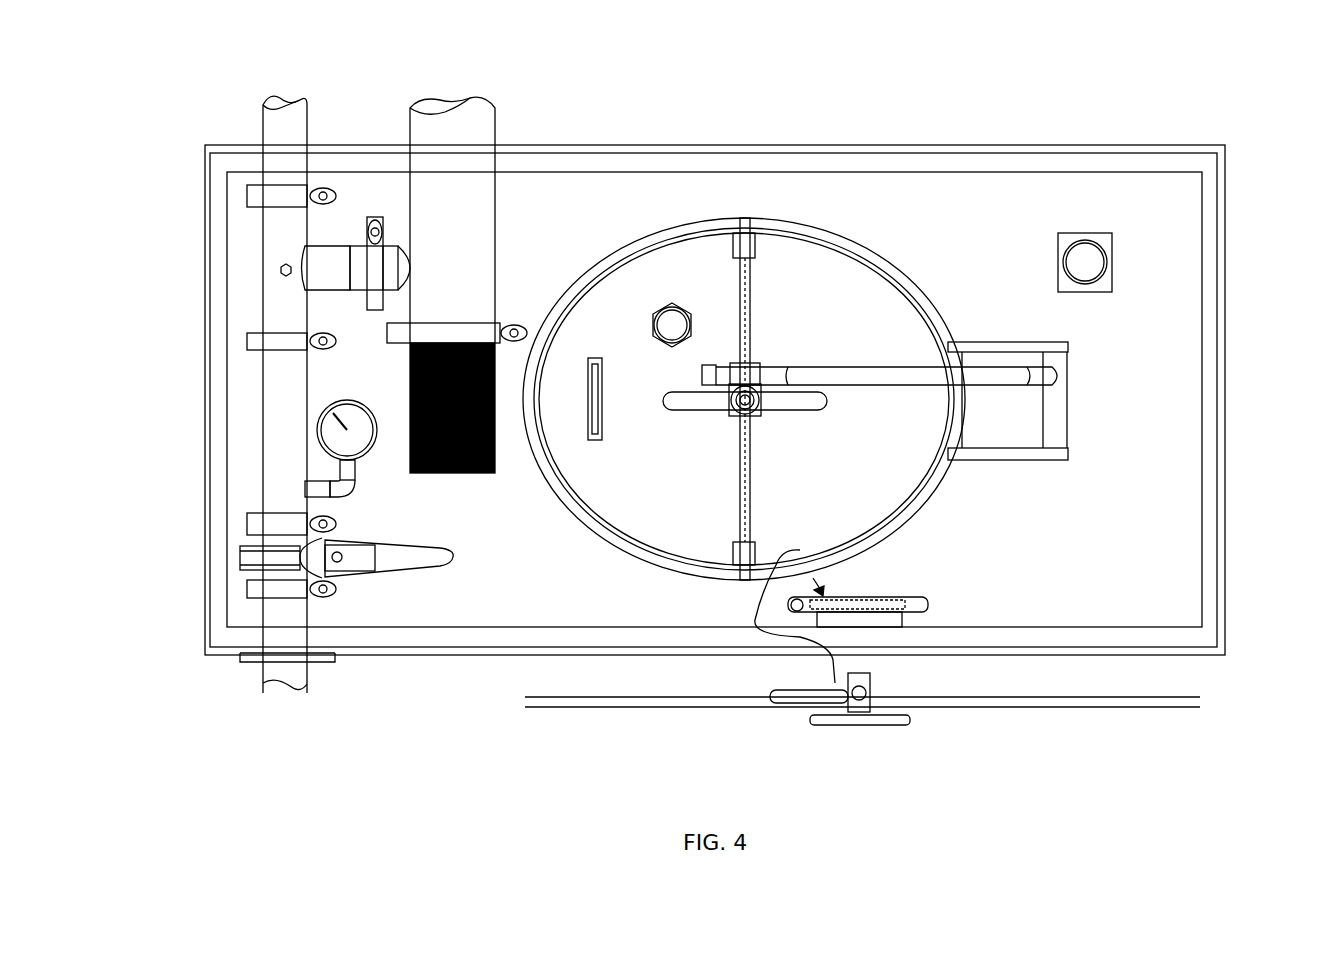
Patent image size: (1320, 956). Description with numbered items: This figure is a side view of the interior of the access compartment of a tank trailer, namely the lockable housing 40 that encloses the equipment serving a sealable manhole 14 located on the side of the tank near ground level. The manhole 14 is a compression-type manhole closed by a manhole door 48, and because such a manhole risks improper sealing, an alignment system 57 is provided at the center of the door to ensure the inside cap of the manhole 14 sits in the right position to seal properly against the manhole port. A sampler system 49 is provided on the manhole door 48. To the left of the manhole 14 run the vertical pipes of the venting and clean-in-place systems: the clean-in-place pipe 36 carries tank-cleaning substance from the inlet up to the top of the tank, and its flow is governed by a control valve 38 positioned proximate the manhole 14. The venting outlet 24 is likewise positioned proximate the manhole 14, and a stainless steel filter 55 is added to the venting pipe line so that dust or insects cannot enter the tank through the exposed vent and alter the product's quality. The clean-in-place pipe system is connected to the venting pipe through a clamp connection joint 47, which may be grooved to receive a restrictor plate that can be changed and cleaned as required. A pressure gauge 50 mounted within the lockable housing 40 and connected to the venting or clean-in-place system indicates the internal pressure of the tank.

The sealable manhole 14 is at (867, 298).
The venting outlet 24 is at (478, 483).
The clean-in-place pipe 36 is at (290, 421).
The control valve 38 is at (357, 562).
The lockable housing 40 is at (1207, 248).
The clamp connection joint 47 is at (350, 238).
The manhole door 48 is at (880, 488).
The sampler system 49 is at (670, 320).
The pressure gauge 50 is at (358, 445).
The stainless steel filter 55 is at (430, 473).
The alignment system 57 is at (763, 356).